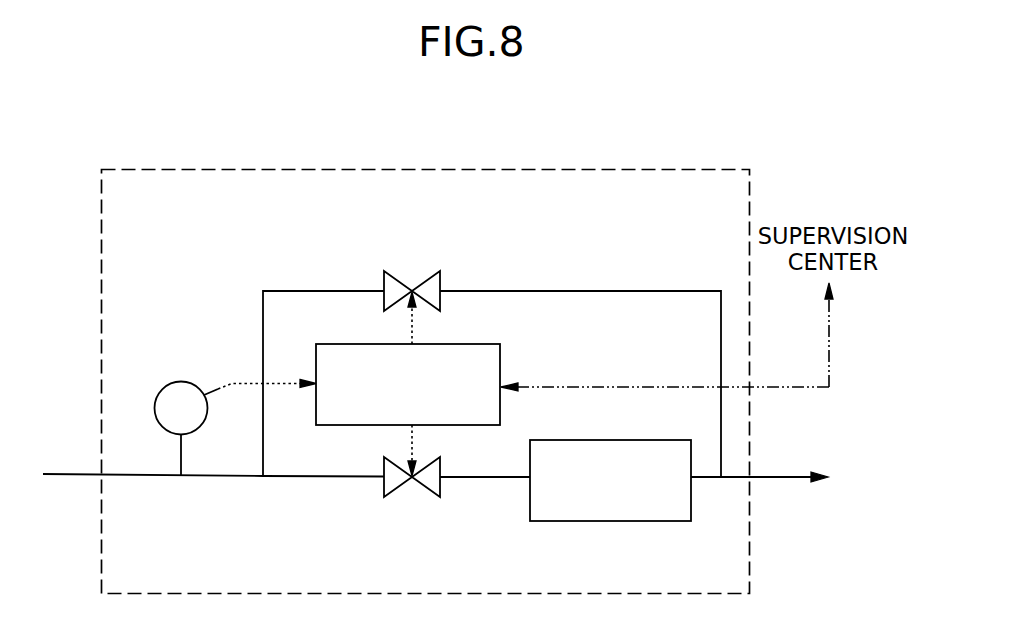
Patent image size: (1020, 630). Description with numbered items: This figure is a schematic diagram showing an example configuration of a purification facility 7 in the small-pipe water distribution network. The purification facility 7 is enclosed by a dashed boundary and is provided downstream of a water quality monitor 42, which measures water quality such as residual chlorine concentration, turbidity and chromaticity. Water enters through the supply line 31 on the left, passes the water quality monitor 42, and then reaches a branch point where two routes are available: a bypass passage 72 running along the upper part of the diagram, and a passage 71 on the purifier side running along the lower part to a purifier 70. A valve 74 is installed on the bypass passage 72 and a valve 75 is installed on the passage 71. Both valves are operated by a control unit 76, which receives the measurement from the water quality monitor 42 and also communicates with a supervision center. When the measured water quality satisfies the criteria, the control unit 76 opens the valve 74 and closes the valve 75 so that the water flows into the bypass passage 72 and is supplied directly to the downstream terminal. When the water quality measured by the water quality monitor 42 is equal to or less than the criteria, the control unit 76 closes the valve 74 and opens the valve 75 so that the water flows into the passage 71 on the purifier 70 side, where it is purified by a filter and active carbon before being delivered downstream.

The purification facility 7 is at (115, 161).
The water supply pipe 31 is at (63, 468).
The water quality monitor 42 is at (161, 377).
The purifier 70 is at (609, 513).
The passage 71 is at (273, 470).
The bypass passage 72 is at (282, 283).
The valve 74 is at (409, 265).
The valve 75 is at (393, 485).
The control unit 76 is at (494, 347).